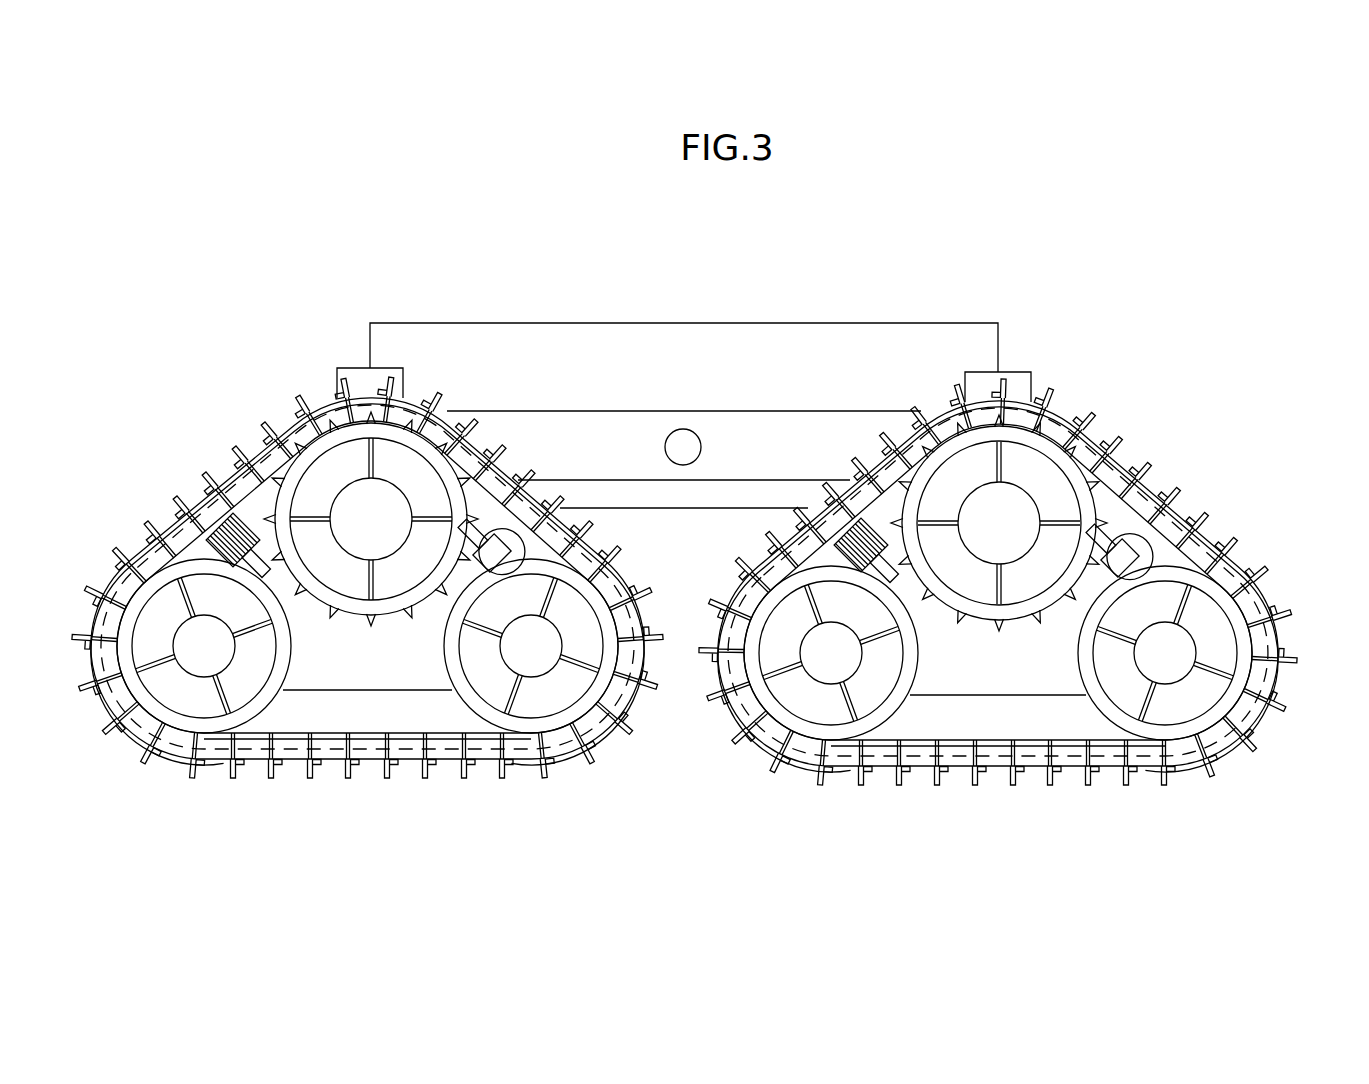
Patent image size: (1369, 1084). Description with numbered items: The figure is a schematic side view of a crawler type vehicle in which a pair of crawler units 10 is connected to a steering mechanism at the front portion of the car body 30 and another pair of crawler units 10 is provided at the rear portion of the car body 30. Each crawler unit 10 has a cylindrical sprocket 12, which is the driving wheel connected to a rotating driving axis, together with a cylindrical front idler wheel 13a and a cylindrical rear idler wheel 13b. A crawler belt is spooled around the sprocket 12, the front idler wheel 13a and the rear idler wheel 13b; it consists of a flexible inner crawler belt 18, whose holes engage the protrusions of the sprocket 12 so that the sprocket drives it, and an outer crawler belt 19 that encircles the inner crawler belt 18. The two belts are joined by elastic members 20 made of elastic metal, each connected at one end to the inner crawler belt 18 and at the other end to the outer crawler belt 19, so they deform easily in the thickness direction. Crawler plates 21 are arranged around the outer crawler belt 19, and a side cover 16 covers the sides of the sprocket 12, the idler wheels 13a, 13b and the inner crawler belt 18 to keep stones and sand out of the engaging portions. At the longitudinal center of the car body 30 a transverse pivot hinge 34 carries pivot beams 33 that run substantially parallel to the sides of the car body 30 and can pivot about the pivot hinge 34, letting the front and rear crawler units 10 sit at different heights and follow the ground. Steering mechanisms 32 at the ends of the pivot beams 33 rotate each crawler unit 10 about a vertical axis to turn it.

The crawler unit 10 is at (158, 522).
The sprocket 12 is at (327, 440).
The front idler wheel 13a is at (583, 715).
The rear idler wheel 13b is at (173, 720).
The side cover 16 is at (445, 757).
The inner crawler belt 18 is at (195, 523).
The outer crawler belt 19 is at (224, 507).
The elastic members 20 is at (322, 762).
The crawler plates 21 is at (307, 445).
The car body 30 is at (858, 368).
The steering mechanism 32 is at (356, 366).
The pivot beams 33 is at (550, 427).
The pivot hinge 34 is at (683, 427).